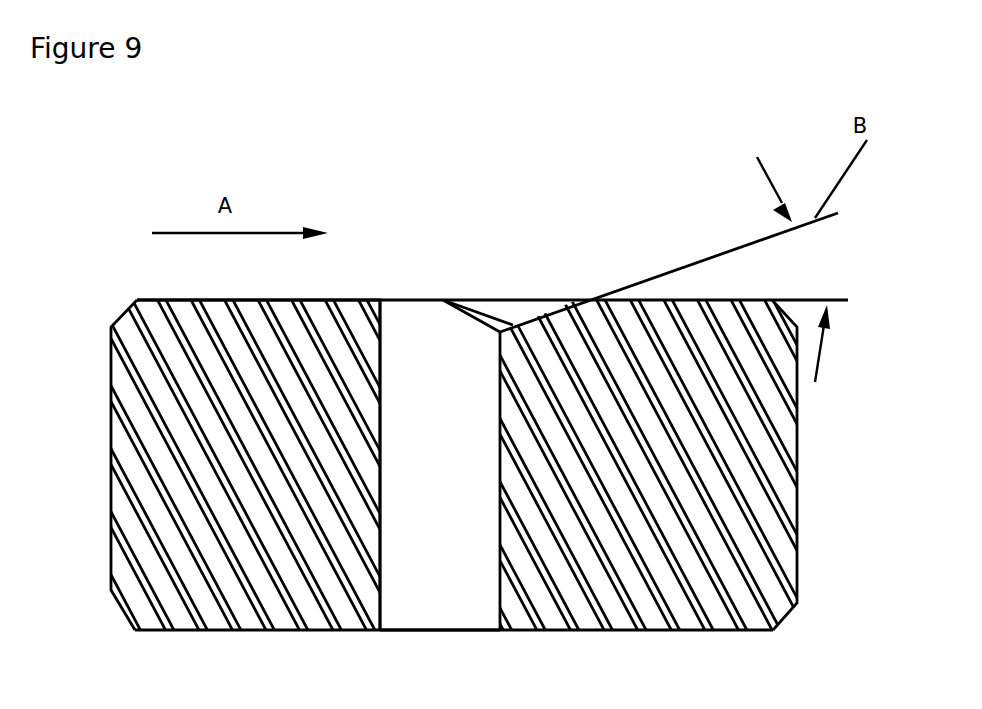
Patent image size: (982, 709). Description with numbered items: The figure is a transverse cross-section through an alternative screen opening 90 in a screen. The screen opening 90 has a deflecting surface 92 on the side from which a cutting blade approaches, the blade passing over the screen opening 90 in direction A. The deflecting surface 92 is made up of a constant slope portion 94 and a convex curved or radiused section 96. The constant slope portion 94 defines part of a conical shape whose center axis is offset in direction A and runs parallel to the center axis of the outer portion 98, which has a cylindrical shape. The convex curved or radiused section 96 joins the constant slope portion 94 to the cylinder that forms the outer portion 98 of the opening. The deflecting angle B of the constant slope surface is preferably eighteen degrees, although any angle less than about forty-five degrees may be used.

The screen opening 90 is at (409, 185).
The deflecting surface 92 is at (535, 290).
The constant slope portion 94 is at (563, 300).
The convex curved or radiused section 96 is at (498, 332).
The outer portion 98 is at (430, 611).